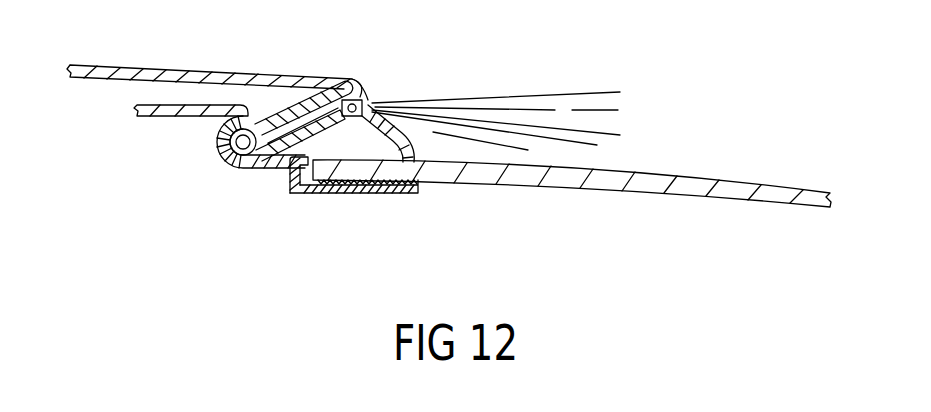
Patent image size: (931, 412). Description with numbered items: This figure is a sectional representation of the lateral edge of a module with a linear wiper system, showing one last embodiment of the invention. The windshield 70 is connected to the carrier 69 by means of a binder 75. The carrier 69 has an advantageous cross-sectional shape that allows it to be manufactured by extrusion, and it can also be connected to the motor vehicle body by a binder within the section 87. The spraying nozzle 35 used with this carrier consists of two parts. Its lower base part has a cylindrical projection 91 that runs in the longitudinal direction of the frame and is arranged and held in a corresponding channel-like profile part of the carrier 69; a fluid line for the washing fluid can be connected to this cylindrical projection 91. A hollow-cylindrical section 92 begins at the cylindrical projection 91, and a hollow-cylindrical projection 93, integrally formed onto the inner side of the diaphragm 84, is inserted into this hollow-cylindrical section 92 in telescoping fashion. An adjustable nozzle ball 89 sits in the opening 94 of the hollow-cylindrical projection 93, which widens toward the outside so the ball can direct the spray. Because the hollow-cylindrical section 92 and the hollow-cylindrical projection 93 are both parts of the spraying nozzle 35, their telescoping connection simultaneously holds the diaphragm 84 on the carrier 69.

The diaphragm 84 is at (235, 64).
The section 87 is at (140, 126).
The carrier 69 is at (256, 168).
The cylindrical projection 91 is at (232, 140).
The hollow-cylindrical projection 93 is at (308, 112).
The spraying nozzle 35 is at (347, 100).
The opening 94 is at (370, 102).
The windshield 70 is at (698, 170).
The hollow-cylindrical section 92 is at (297, 196).
The binder 75 is at (408, 194).
The nozzle ball 89 is at (362, 114).